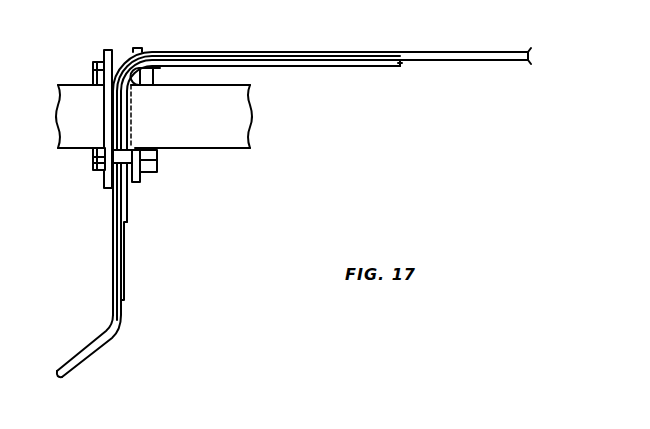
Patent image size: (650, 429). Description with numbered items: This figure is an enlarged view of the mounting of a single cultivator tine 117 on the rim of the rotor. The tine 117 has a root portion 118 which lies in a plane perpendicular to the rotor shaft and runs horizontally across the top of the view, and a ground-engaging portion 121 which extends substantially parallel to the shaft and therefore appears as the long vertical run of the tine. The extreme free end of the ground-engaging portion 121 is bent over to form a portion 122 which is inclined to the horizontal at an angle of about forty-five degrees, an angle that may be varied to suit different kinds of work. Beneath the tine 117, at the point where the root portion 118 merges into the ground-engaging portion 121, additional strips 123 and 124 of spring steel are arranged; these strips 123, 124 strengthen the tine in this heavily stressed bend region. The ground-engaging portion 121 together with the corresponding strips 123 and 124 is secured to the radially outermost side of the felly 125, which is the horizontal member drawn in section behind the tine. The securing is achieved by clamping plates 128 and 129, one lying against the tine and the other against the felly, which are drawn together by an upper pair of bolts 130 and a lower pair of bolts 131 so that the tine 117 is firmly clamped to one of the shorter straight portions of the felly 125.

The tine 117 is at (499, 45).
The root portion 118 is at (300, 52).
The ground-engaging portion 121 is at (113, 263).
The bent-over portion 122 is at (92, 347).
The strip 123 is at (403, 62).
The strip 124 is at (373, 67).
The felly 125 is at (197, 149).
The clamping plate 128 is at (138, 48).
The clamping plate 129 is at (108, 50).
The upper pair of bolts 130 is at (100, 62).
The lower pair of bolts 131 is at (93, 158).